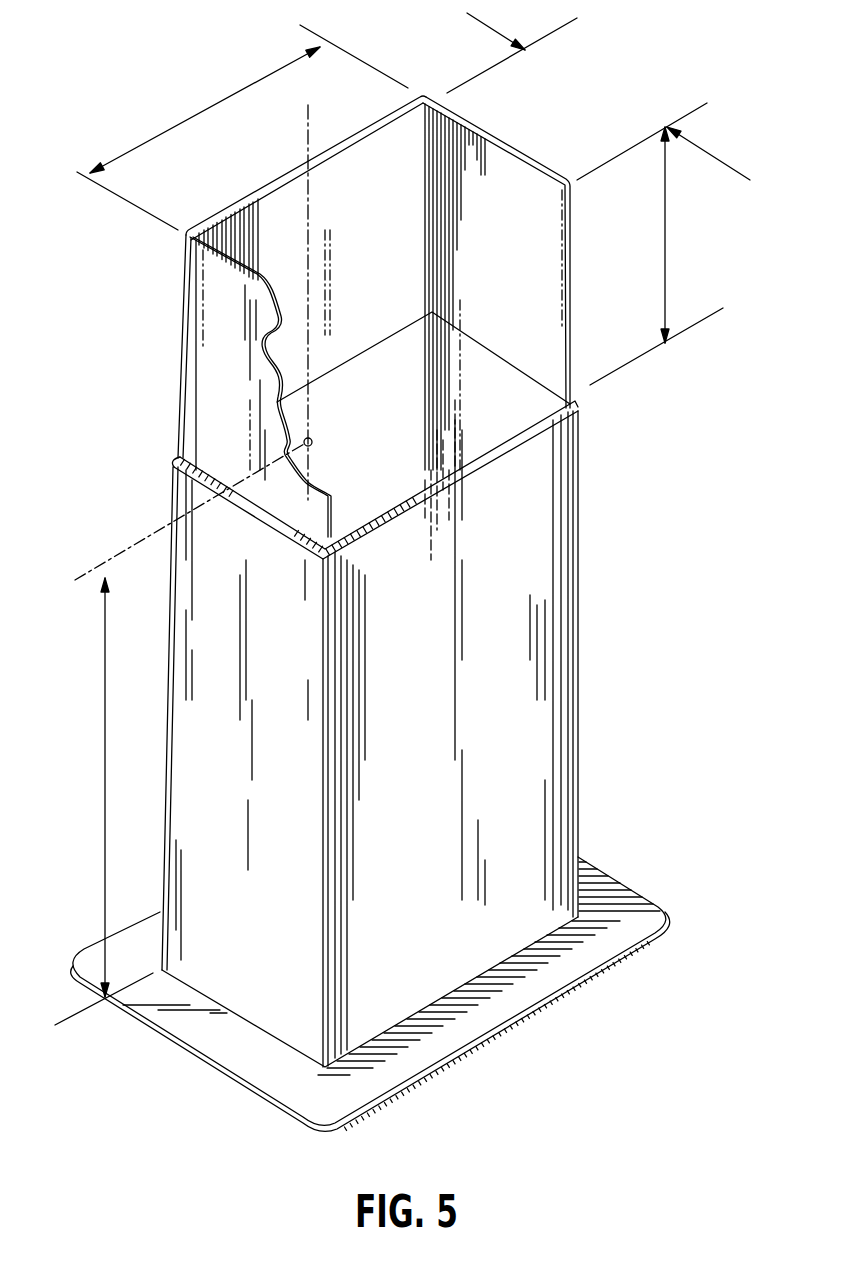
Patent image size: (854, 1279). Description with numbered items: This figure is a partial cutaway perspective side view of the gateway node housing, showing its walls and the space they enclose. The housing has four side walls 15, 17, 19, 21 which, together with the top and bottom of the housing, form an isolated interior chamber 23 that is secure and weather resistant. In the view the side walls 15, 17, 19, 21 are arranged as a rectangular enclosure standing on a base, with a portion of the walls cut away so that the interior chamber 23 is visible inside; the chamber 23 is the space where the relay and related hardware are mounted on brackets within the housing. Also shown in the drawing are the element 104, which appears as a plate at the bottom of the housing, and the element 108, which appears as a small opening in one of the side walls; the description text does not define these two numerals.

The side wall 15 is at (266, 228).
The side wall 17 is at (570, 380).
The side wall 19 is at (508, 632).
The side wall 21 is at (217, 366).
The interior chamber 23 is at (478, 400).
The base plate 104 is at (635, 912).
The aperture 108 is at (292, 432).